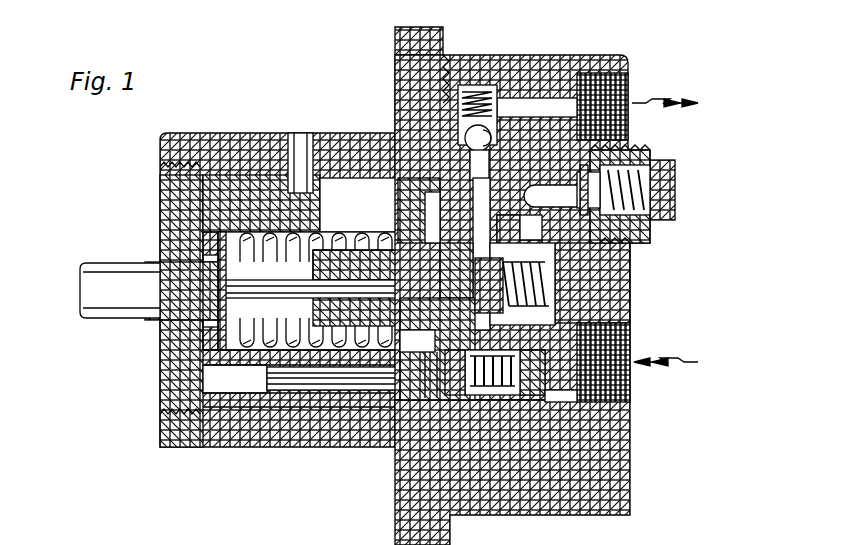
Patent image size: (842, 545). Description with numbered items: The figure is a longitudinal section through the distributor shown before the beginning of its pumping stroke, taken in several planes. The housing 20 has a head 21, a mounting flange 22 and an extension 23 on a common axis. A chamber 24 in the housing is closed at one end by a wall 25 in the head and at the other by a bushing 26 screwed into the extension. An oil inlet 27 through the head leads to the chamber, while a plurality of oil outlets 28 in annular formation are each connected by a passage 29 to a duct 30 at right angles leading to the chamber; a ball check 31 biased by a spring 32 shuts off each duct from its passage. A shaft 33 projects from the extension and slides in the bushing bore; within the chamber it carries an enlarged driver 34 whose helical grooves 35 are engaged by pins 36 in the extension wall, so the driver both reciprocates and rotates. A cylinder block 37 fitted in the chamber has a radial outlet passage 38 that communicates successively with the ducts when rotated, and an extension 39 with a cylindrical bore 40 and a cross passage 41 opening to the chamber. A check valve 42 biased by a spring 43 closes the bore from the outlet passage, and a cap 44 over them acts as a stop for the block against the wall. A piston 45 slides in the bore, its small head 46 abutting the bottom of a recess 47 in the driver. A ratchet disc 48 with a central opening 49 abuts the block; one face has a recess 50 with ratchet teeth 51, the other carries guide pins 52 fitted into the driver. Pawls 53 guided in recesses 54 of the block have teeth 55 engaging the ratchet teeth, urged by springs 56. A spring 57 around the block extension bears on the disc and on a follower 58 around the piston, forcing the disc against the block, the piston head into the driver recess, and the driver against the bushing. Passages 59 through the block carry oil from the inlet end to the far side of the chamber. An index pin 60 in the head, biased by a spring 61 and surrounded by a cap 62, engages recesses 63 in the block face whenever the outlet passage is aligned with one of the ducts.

The housing 20 is at (394, 130).
The head 21 is at (545, 70).
The mounting flange 22 is at (400, 496).
The extension 23 is at (238, 440).
The chamber 24 is at (359, 205).
The wall 25 is at (622, 292).
The bushing 26 is at (166, 406).
The oil inlet 27 is at (620, 345).
The oil outlets 28 is at (626, 90).
The passage 29 is at (528, 108).
The duct 30 is at (470, 160).
The ball check 31 is at (470, 133).
The spring 32 is at (458, 90).
The shaft 33 is at (112, 275).
The driver 34 is at (205, 190).
The helical grooves 35 is at (356, 266).
The pins 36 is at (300, 160).
The cylinder block 37 is at (570, 396).
The outlet passage 38 is at (520, 197).
The extension 39 is at (372, 250).
The cylindrical bore 40 is at (440, 349).
The cross passage 41 is at (440, 255).
The check valve 42 is at (500, 268).
The spring 43 is at (525, 280).
The cap 44 is at (548, 300).
The piston 45 is at (235, 379).
The head 46 is at (222, 292).
The recess 47 is at (250, 238).
The ratchet disc 48 is at (310, 165).
The central opening 49 is at (332, 390).
The recess 50 is at (412, 212).
The ratchet teeth 51 is at (392, 398).
The guide pins 52 is at (308, 396).
The pawls 53 is at (455, 396).
The recesses 54 is at (505, 396).
The teeth 55 is at (432, 400).
The springs 56 is at (523, 372).
The spring 57 is at (240, 300).
The follower 58 is at (216, 238).
The passages 59 is at (434, 210).
The index pin 60 is at (598, 145).
The spring 61 is at (655, 165).
The cap 62 is at (668, 190).
The recesses 63 is at (560, 188).